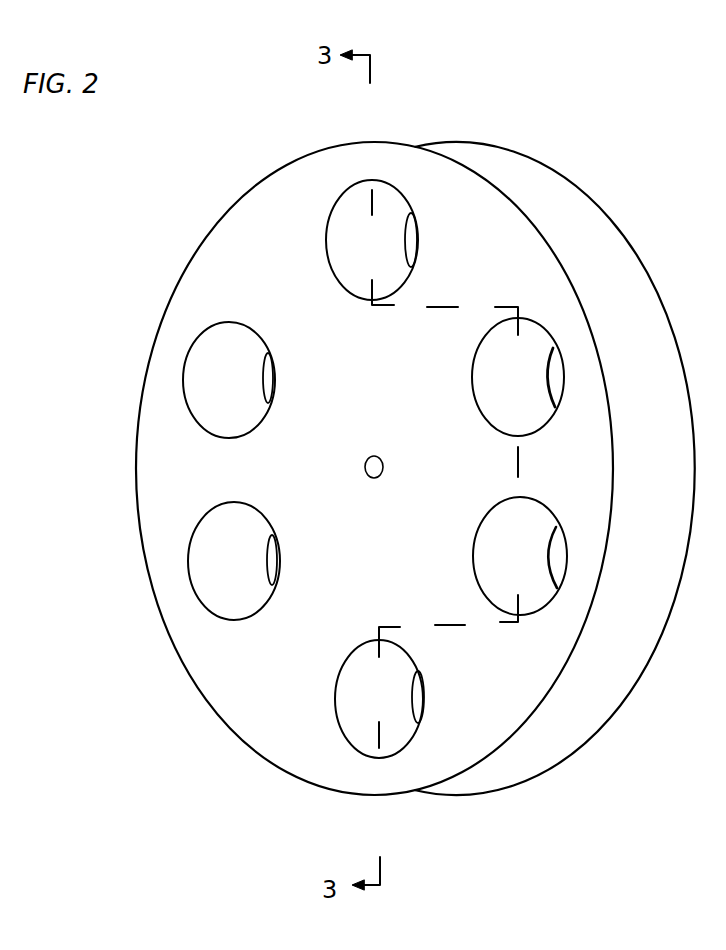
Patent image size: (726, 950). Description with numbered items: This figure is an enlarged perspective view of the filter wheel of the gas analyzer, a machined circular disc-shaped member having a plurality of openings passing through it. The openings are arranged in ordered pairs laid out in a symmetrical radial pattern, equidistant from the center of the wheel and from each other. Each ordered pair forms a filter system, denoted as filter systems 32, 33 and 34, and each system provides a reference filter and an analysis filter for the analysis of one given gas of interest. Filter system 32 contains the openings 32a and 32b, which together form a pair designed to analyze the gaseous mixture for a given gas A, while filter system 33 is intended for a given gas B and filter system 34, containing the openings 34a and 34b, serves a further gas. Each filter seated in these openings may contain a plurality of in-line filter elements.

The filter system 32 is at (502, 606).
The opening 32a is at (348, 205).
The opening 32b is at (490, 362).
The filter system 33 is at (495, 322).
The filter system 34 is at (232, 432).
The opening 34a is at (220, 612).
The opening 34b is at (217, 332).